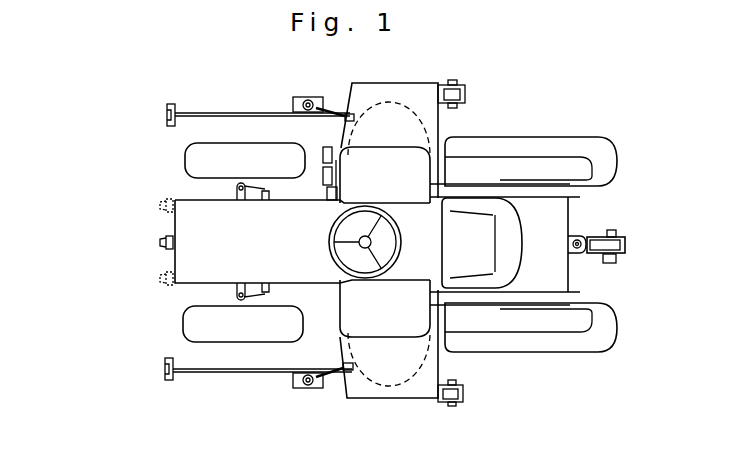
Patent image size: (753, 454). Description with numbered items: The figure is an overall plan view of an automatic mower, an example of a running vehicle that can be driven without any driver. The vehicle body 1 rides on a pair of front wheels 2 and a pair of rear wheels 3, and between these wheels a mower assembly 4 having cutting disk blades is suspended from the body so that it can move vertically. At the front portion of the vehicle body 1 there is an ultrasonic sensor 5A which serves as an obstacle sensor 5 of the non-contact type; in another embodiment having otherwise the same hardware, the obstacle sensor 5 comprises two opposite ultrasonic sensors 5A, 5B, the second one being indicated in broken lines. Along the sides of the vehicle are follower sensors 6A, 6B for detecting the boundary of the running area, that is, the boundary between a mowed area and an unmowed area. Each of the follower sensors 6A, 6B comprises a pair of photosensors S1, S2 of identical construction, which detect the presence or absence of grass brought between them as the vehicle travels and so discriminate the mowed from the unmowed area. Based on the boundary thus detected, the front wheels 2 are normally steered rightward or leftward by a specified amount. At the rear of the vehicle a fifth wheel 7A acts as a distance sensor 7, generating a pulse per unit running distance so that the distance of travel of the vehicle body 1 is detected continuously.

The vehicle body 1 is at (183, 286).
The front wheels 2 is at (238, 143).
The rear wheels 3 is at (540, 137).
The mower assembly 4 is at (419, 399).
The obstacle sensor 5 is at (100, 273).
The ultrasonic sensor 5A is at (160, 278).
The ultrasonic sensor 5B is at (160, 205).
The follower sensor 6A is at (170, 388).
The follower sensor 6B is at (181, 97).
The distance sensor 7 is at (631, 273).
The fifth wheel 7A is at (617, 263).
The photosensor S1 is at (167, 125).
The photosensor S2 is at (168, 106).